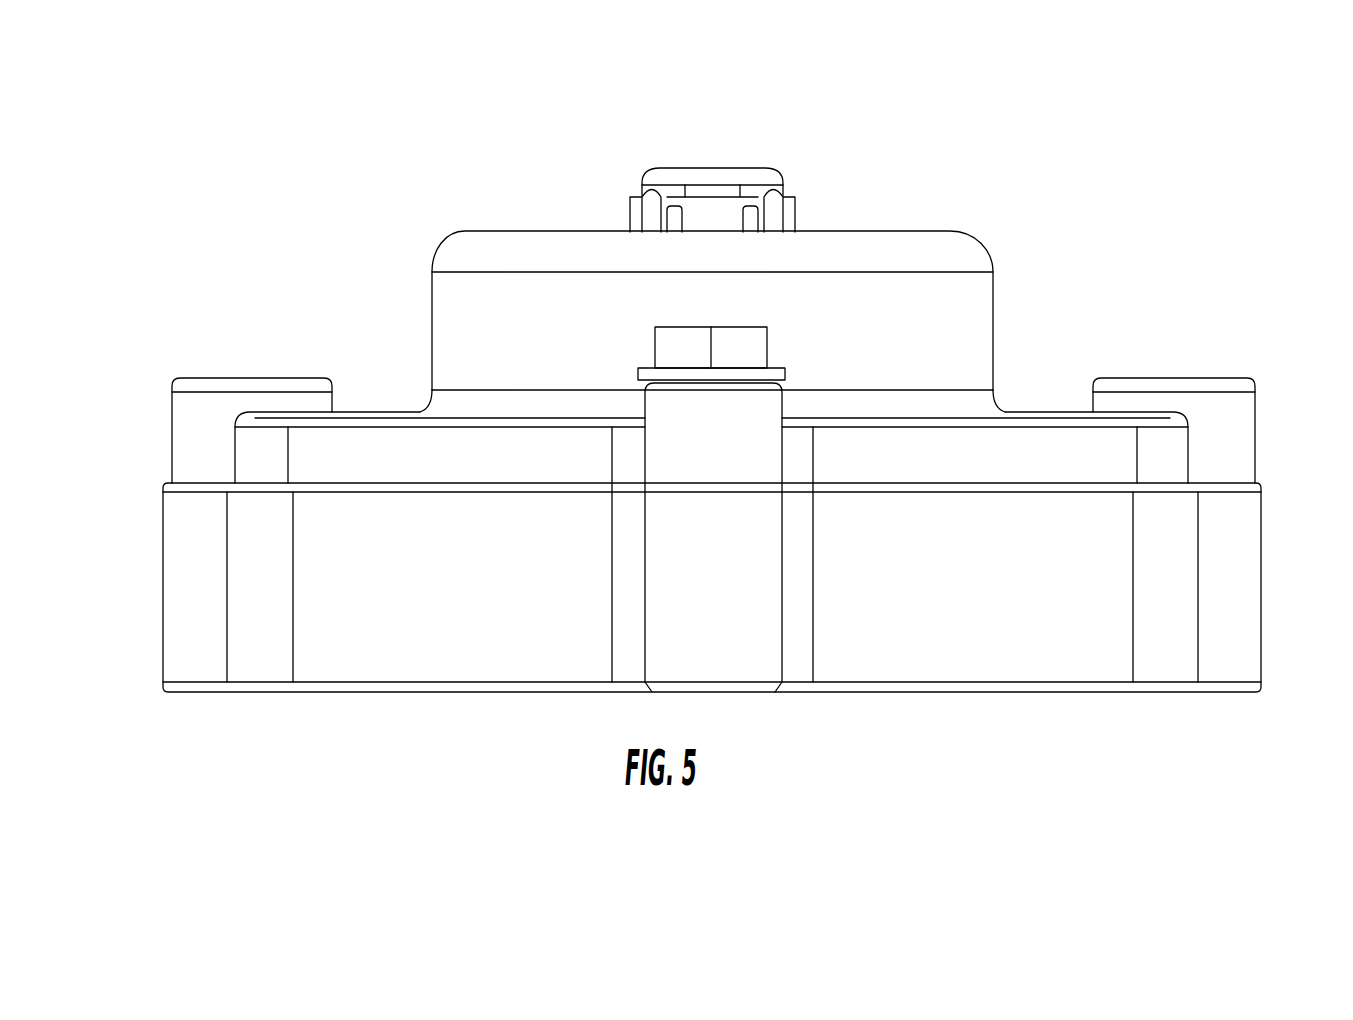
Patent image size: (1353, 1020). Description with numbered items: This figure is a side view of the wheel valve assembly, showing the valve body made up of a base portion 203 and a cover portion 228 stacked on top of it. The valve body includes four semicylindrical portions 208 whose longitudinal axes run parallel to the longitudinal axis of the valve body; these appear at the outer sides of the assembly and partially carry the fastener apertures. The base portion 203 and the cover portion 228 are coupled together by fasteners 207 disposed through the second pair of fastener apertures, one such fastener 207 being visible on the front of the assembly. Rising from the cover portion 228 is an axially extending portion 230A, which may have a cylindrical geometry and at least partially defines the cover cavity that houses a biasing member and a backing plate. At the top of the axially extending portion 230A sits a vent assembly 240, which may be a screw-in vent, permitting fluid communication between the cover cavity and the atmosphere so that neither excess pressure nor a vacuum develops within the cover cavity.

The base portion 203 is at (1007, 655).
The fasteners 207 is at (678, 350).
The semicylindrical portions 208 is at (187, 453).
The cover portion 228 is at (962, 452).
The axially extending portion 230A is at (948, 315).
The vent assembly 240 is at (710, 180).